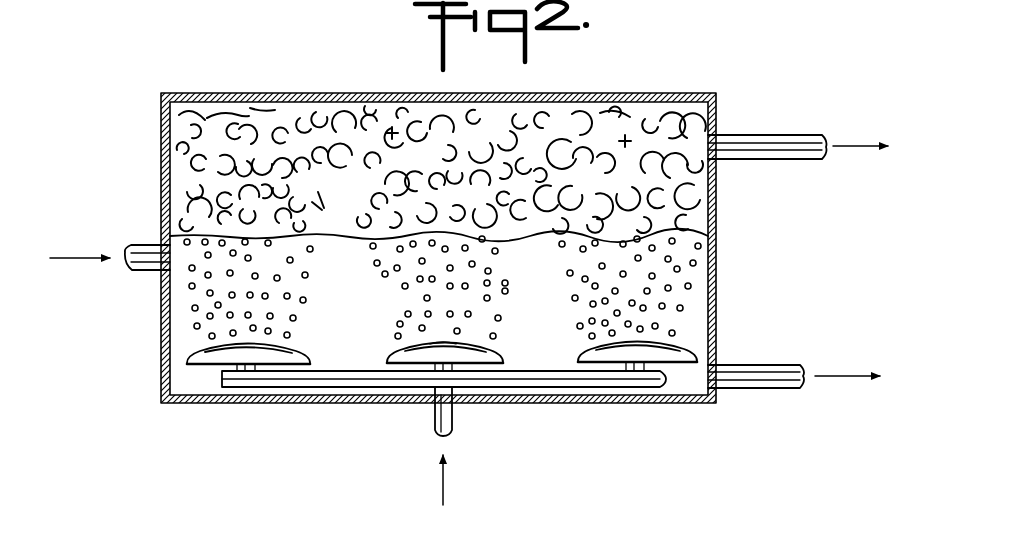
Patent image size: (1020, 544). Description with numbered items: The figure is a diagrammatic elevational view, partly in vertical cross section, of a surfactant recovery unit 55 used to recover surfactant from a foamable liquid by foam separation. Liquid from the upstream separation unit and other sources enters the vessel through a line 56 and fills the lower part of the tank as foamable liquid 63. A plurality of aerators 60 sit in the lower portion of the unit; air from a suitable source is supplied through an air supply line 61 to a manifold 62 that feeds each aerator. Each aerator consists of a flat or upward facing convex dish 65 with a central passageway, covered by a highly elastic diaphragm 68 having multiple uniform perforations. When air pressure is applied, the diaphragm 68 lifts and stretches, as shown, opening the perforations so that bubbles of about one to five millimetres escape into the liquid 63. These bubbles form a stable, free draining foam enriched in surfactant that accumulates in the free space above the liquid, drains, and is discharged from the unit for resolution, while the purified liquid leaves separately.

The surfactant recovery unit 55 is at (646, 92).
The line 56 is at (139, 245).
The foamable liquid 63 is at (326, 262).
The manifold 62 is at (330, 380).
The aerator 60 is at (474, 341).
The elastic diaphragm 68 is at (432, 343).
The convex dish 65 is at (476, 366).
The gas inlet pipe 61 is at (433, 412).